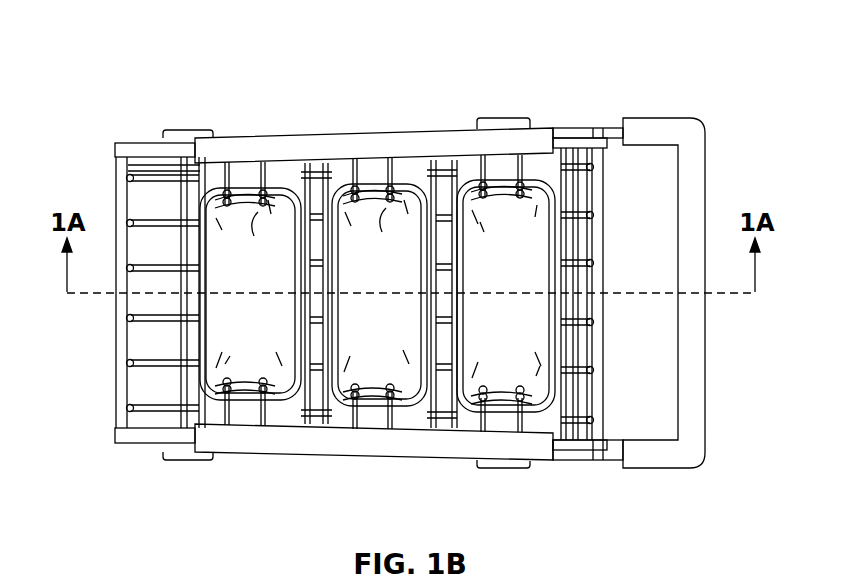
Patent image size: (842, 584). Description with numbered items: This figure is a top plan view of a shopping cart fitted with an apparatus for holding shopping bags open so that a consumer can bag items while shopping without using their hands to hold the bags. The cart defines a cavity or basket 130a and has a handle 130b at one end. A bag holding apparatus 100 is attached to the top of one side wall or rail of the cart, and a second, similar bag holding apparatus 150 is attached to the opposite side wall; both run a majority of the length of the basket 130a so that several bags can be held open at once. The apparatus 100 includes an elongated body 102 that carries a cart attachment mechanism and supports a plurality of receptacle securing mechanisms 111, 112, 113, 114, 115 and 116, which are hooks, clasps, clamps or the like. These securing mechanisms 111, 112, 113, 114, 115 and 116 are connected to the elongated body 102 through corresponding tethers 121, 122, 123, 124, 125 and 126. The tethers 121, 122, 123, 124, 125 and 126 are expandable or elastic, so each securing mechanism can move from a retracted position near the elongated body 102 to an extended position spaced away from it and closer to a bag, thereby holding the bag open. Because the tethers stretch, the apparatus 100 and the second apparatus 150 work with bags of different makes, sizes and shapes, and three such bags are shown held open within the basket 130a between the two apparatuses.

The bag holding apparatus 100 is at (250, 126).
The elongated body 102 is at (497, 152).
The receptacle securing mechanism 111 is at (211, 203).
The receptacle securing mechanism 112 is at (260, 208).
The receptacle securing mechanism 113 is at (330, 192).
The receptacle securing mechanism 114 is at (386, 206).
The receptacle securing mechanism 115 is at (490, 203).
The receptacle securing mechanism 116 is at (545, 200).
The tether 121 is at (213, 167).
The tether 122 is at (224, 196).
The tether 123 is at (352, 193).
The tether 124 is at (393, 193).
The tether 125 is at (483, 188).
The tether 126 is at (523, 192).
The basket 130a is at (140, 384).
The handle 130b is at (706, 395).
The second bag holding apparatus 150 is at (288, 440).